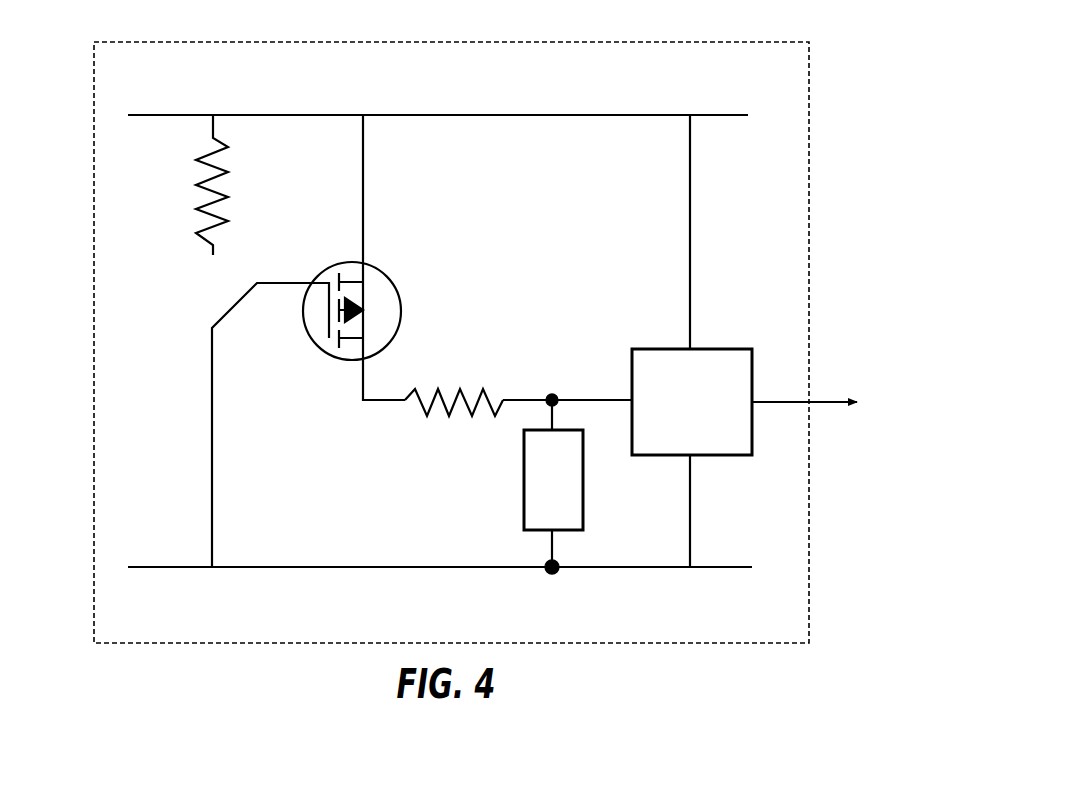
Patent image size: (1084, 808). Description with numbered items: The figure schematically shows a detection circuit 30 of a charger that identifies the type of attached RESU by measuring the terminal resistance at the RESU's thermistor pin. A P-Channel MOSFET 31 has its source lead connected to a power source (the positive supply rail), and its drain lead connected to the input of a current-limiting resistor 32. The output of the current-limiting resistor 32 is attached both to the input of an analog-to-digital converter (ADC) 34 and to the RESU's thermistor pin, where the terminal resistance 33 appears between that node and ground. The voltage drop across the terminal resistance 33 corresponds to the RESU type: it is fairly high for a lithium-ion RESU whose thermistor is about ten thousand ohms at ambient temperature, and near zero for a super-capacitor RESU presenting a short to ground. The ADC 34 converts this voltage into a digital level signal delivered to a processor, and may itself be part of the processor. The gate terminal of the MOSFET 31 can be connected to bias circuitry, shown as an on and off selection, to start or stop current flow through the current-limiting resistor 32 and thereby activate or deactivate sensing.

The detection circuit 30 is at (503, 342).
The P-Channel MOSFET 31 is at (334, 257).
The current-limiting resistor 32 is at (481, 380).
The terminal resistance 33 is at (521, 487).
The analog-to-digital converter (ADC) 34 is at (655, 346).